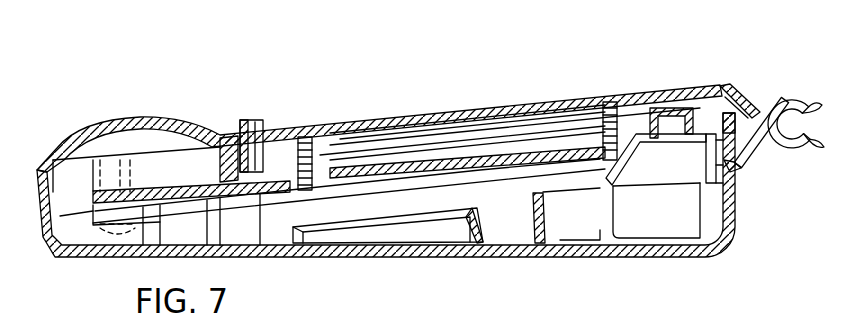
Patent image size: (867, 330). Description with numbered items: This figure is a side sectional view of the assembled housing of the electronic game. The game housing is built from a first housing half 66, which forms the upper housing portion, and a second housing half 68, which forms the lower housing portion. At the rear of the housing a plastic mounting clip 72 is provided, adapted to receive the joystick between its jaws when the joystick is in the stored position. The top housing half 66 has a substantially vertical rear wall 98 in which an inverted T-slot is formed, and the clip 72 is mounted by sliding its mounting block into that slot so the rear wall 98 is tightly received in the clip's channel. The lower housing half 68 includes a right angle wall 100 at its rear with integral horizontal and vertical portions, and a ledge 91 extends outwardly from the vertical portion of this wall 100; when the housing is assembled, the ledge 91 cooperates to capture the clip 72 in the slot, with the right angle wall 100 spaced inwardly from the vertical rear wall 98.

The first housing half 66 is at (650, 82).
The second housing half 68 is at (702, 263).
The plastic mounting clip 72 is at (798, 176).
The ledge 91 is at (741, 168).
The vertical rear wall 98 is at (748, 108).
The right angle wall 100 is at (700, 174).